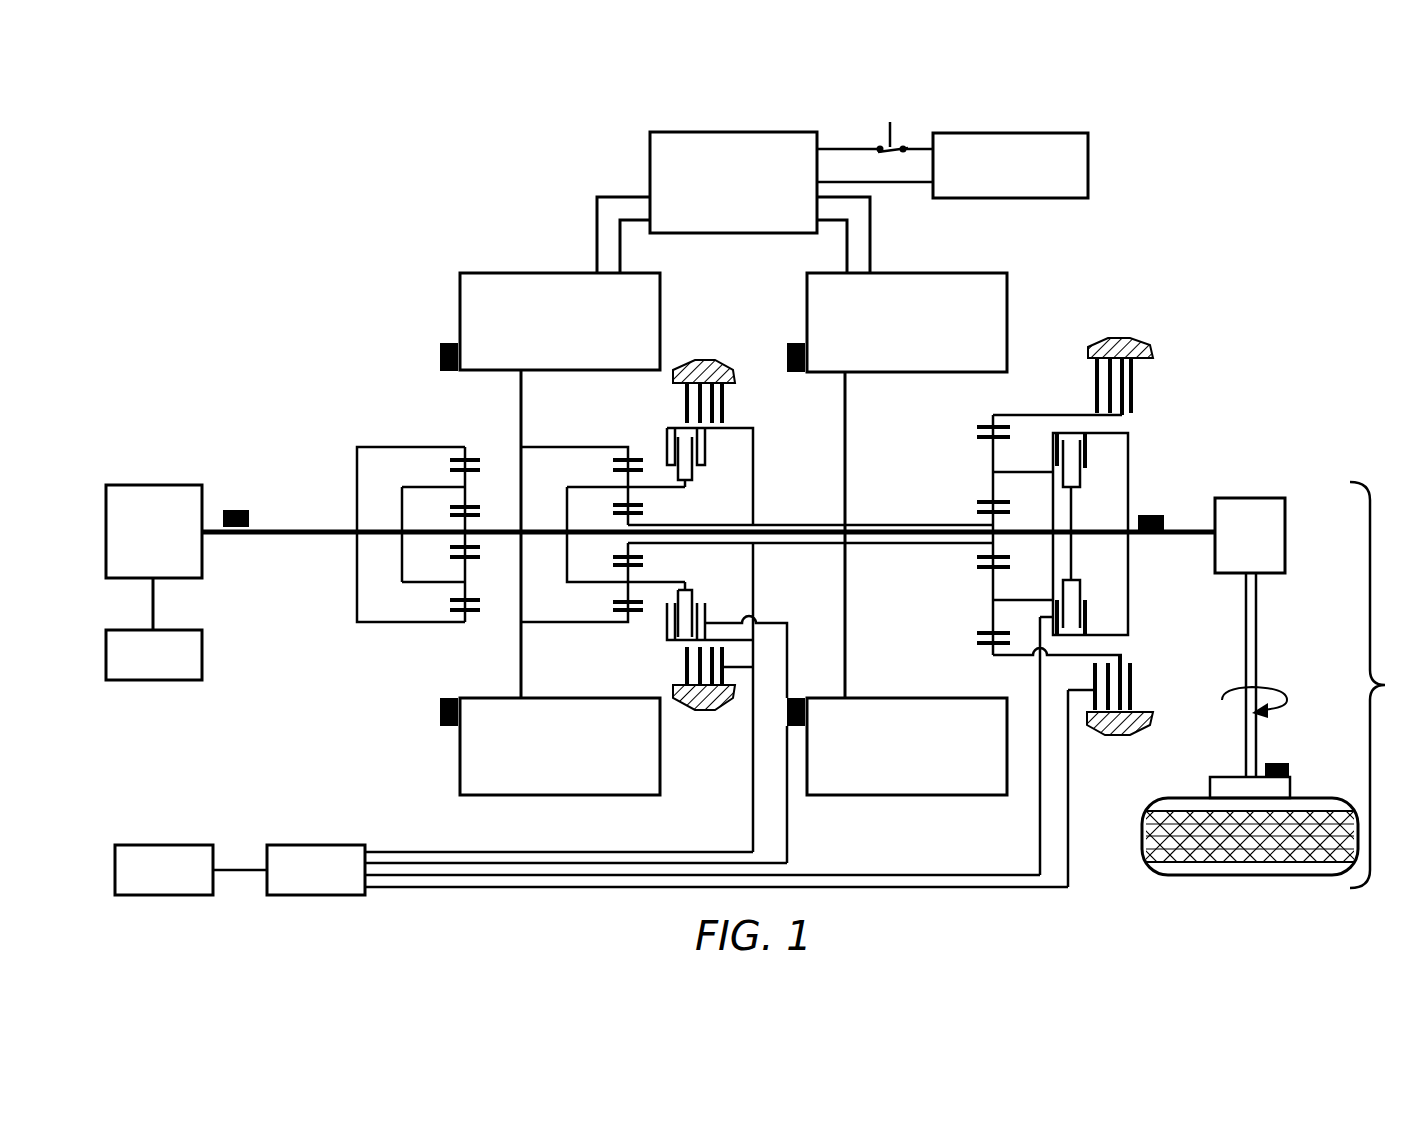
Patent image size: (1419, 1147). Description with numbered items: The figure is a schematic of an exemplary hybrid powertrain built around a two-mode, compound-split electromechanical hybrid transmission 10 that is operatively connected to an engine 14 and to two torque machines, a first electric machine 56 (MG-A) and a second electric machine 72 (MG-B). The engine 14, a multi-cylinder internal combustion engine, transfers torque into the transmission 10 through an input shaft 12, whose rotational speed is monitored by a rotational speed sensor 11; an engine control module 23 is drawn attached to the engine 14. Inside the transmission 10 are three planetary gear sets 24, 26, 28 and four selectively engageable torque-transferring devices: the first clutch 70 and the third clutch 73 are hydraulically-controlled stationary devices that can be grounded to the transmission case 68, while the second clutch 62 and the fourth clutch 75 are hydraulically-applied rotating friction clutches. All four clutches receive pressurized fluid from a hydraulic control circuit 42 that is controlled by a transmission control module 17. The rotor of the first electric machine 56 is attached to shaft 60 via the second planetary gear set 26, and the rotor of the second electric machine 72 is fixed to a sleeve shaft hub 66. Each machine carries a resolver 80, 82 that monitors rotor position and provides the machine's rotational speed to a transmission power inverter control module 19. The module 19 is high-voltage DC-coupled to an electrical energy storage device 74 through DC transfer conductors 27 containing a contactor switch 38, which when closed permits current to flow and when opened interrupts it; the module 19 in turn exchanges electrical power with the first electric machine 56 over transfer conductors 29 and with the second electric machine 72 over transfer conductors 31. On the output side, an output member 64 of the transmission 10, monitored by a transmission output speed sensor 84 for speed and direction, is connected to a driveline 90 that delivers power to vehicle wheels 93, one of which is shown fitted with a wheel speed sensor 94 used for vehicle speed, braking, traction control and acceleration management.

The electromechanical hybrid transmission 10 is at (418, 230).
The rotational speed sensor 11 is at (236, 508).
The input shaft 12 is at (315, 530).
The engine 14 is at (160, 485).
The transmission control module 17 is at (155, 845).
The transmission power inverter control module 19 is at (650, 150).
The engine control module 23 is at (202, 670).
The first planetary gear set 24 is at (452, 435).
The second planetary gear set 26 is at (622, 435).
The DC transfer conductors 27 is at (832, 148).
The third planetary gear set 28 is at (985, 410).
The transfer conductors 29 is at (597, 232).
The transfer conductors 31 is at (870, 237).
The contactor switch 38 is at (896, 130).
The hydraulic control circuit 42 is at (283, 845).
The first electric machine 56 is at (460, 305).
The shaft 60 is at (1045, 532).
The clutch C2 62 is at (1098, 474).
The output member 64 is at (1185, 530).
The sleeve shaft hub 66 is at (883, 525).
The transmission case 68 is at (703, 360).
The clutch C1 70 is at (1080, 375).
The second electric machine 72 is at (1007, 296).
The clutch C3 73 is at (735, 410).
The electrical energy storage device 74 is at (1088, 157).
The clutch C4 75 is at (712, 462).
The resolver 80 is at (440, 357).
The resolver 82 is at (796, 343).
The transmission output speed sensor 84 is at (1152, 513).
The driveline 90 is at (1279, 685).
The vehicle wheel 93 is at (1210, 790).
The wheel speed sensor 94 is at (1280, 762).